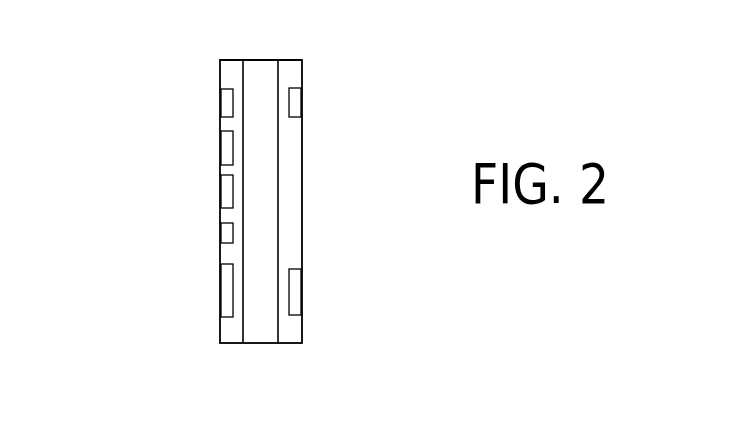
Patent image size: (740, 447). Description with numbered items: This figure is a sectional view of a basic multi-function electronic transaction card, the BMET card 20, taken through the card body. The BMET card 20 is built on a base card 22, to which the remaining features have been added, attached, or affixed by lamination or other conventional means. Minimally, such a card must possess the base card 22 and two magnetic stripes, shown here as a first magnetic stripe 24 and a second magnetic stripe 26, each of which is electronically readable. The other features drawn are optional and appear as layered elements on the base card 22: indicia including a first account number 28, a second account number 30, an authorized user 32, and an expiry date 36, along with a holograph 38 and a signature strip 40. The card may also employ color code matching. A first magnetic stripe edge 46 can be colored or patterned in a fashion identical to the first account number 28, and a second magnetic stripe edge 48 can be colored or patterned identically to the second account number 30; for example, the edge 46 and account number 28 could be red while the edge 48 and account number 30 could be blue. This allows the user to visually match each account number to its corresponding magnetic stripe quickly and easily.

The BMET card 20 is at (310, 340).
The base card 22 is at (260, 60).
The first magnetic stripe 24 is at (220, 100).
The second magnetic stripe 26 is at (302, 103).
The first account number 28 is at (220, 150).
The second account number 30 is at (220, 190).
The authorized user 32 is at (220, 234).
The expiry date 36 is at (114, 6).
The holograph 38 is at (220, 290).
The signature strip 40 is at (302, 290).
The first magnetic stripe edge 46 is at (220, 66).
The second magnetic stripe edge 48 is at (302, 75).